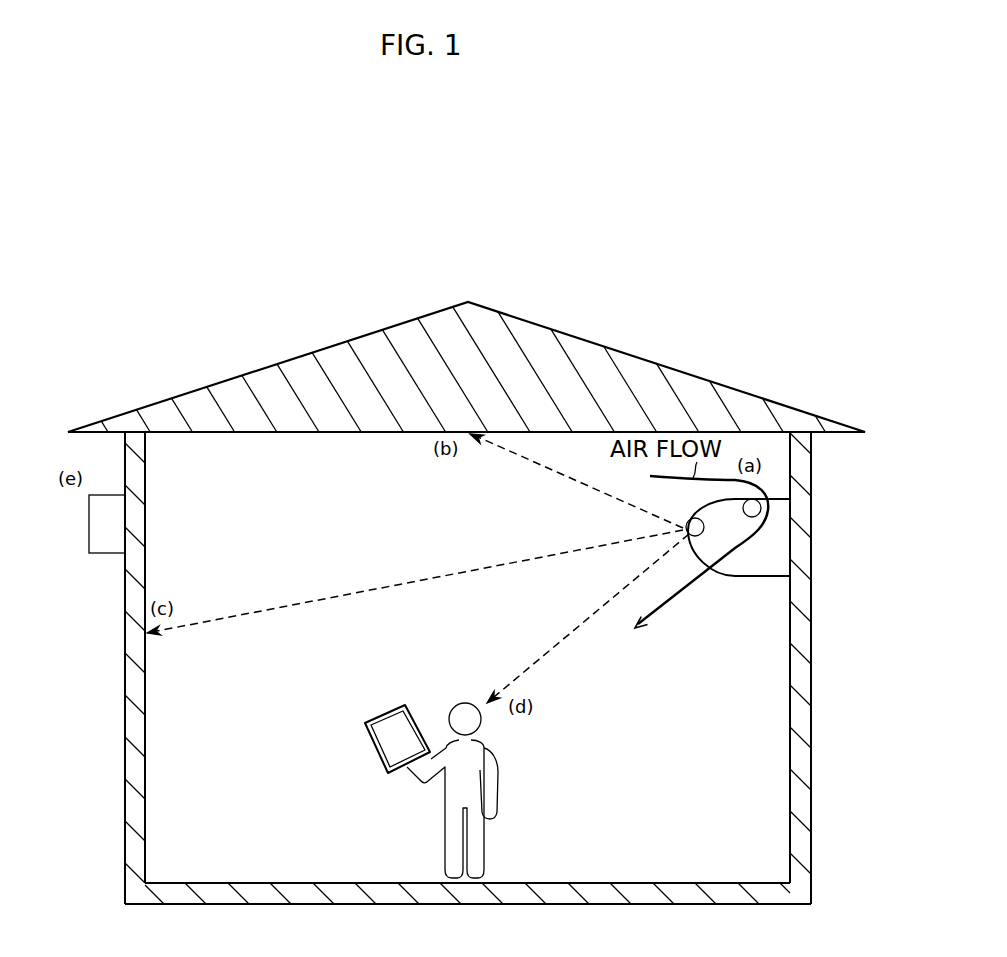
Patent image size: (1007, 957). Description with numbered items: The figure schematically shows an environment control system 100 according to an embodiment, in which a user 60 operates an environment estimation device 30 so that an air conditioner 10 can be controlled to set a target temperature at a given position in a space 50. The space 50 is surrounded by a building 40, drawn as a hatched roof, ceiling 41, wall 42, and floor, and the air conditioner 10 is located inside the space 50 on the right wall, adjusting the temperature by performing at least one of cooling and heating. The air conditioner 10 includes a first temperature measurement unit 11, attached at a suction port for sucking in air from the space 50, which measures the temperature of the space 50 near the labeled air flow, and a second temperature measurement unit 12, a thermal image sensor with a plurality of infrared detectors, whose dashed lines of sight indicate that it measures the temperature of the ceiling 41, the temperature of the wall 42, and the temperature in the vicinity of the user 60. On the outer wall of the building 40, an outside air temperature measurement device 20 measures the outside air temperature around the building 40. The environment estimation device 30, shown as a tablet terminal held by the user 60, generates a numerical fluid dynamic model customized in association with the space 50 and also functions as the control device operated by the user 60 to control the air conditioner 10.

The environment control system 100 is at (795, 271).
The air conditioner 10 is at (735, 568).
The first temperature measurement unit 11 is at (757, 509).
The second temperature measurement unit 12 is at (685, 525).
The outside air temperature measurement device 20 is at (100, 527).
The environment estimation device 30 is at (365, 722).
The building 40 is at (730, 400).
The ceiling 41 is at (262, 424).
The wall 42 is at (137, 700).
The space 50 is at (662, 756).
The user 60 is at (493, 752).